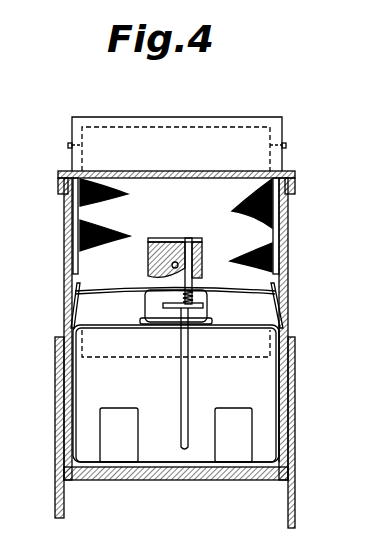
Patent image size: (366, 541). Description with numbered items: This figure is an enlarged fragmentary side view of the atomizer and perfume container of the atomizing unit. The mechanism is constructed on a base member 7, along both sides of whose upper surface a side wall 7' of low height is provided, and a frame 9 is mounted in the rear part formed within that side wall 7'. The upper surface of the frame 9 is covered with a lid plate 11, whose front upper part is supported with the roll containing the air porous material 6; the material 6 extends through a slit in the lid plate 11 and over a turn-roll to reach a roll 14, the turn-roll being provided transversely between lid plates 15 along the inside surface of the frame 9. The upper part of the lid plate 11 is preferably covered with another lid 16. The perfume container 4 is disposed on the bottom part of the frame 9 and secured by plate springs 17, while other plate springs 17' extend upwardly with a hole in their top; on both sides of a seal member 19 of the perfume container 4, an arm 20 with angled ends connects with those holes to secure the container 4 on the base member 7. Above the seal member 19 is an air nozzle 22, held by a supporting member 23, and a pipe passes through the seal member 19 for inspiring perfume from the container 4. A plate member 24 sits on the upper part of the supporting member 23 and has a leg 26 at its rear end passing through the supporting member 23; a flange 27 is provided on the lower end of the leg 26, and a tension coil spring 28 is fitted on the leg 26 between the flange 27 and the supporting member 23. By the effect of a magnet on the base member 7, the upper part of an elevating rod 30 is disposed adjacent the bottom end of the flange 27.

The perfume container 4 is at (82, 414).
The air porous material 6 is at (262, 244).
The base member 7 is at (176, 345).
The side wall 7' is at (178, 432).
The frame 9 is at (287, 322).
The lid plate 11 is at (58, 173).
The roll 14 is at (258, 135).
The lid plates 15 is at (75, 241).
The lid 16 is at (73, 118).
The plate springs 17 is at (140, 398).
The plate springs 17' is at (307, 305).
The seal member 19 is at (145, 311).
The arm 20 is at (108, 291).
The air nozzle 22 is at (172, 265).
The supporting member 23 is at (194, 277).
The plate member 24 is at (193, 231).
The leg 26 is at (201, 255).
The flange 27 is at (205, 310).
The tension coil spring 28 is at (193, 297).
The elevating rod 30 is at (181, 420).